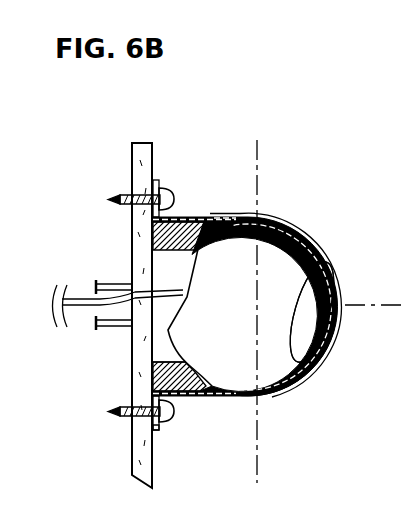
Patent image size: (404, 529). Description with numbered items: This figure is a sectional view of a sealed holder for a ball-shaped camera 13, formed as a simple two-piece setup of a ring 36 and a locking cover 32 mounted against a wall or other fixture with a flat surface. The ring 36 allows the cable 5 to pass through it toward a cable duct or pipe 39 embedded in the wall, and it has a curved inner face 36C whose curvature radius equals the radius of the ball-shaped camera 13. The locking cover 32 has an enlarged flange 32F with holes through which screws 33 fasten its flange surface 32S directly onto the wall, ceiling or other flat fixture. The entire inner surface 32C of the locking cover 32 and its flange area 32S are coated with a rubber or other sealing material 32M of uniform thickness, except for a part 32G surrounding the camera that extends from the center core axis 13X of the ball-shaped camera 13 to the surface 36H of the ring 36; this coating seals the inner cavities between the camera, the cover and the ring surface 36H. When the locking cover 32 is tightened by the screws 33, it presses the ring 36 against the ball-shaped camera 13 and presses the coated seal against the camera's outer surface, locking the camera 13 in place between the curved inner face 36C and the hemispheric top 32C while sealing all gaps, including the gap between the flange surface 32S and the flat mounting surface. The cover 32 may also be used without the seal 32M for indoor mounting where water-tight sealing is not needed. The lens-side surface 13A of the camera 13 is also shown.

The cable 5 is at (90, 302).
The ball-shaped camera 13 is at (273, 370).
The lens front surface 13A is at (313, 333).
The center core axis 13X is at (323, 325).
The locking cover 32 is at (212, 395).
The inner surface 32C is at (312, 245).
The flange 32F is at (165, 427).
The part surrounding the ball-shaped camera 32G is at (225, 215).
The sealing material 32M is at (272, 214).
The flange surface 32S is at (153, 428).
The screws 33 is at (170, 187).
The ring 36 is at (153, 383).
The curved inner face 36C is at (156, 368).
The surface of the ring 36H is at (190, 213).
The cable duct or pipe 39 is at (106, 282).